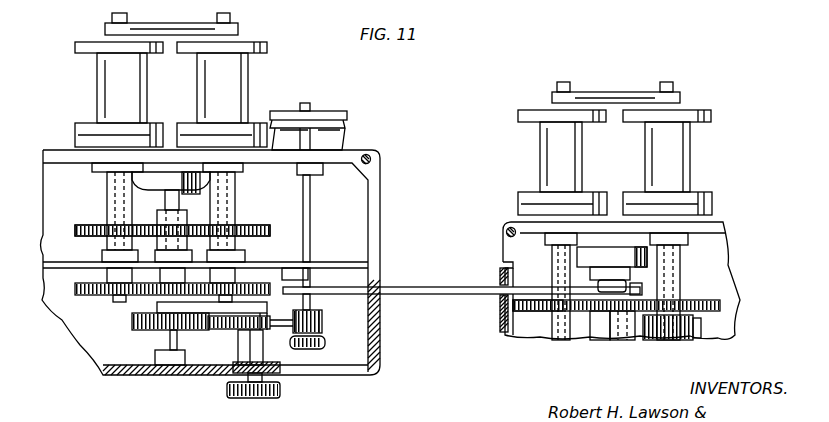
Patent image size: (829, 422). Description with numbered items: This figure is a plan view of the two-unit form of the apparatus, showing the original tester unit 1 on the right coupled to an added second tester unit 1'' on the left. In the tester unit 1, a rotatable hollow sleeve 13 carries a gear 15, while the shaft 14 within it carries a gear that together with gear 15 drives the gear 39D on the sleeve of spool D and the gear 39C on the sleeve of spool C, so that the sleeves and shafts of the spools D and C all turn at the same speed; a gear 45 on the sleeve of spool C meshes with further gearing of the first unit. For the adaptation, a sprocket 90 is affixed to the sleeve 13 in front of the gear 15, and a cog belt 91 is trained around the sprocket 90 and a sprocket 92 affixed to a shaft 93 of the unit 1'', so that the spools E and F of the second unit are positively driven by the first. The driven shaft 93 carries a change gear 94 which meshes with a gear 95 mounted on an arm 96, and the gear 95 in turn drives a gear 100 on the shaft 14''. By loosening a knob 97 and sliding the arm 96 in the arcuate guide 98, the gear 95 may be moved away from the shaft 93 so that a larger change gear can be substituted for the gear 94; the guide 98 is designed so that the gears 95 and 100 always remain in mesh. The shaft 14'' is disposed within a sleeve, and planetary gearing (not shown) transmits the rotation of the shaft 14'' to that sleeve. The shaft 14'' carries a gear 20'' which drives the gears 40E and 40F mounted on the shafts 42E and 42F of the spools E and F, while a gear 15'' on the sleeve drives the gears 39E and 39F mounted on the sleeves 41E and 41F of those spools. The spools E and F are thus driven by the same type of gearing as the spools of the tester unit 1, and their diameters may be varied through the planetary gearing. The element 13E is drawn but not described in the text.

The spool F is at (85, 86).
The spool E is at (248, 78).
The spool D is at (530, 150).
The spool C is at (696, 151).
The tester unit 1 is at (637, 172).
The second tester unit 1'' is at (235, 190).
The sleeve 41F is at (107, 185).
The shaft 42F is at (110, 198).
The sleeve 41E is at (235, 186).
The shaft 42E is at (230, 200).
The gear 15'' is at (171, 188).
The drive shaft 13E is at (157, 216).
The gear 39F is at (75, 230).
The gear 39E is at (270, 230).
The shaft 93 is at (310, 207).
The gear 40E is at (306, 286).
The gear 40F is at (75, 288).
The cog belt 91 is at (430, 287).
The gear 20'' is at (172, 315).
The gear 100 is at (132, 324).
The shaft 14'' is at (150, 347).
The arm 96 is at (240, 347).
The arcuate guide 98 is at (232, 376).
The knob 97 is at (280, 388).
The sprocket 92 is at (322, 298).
The gear 94 is at (322, 322).
The gear 95 is at (290, 340).
The sprocket 90 is at (640, 283).
The gear 39C is at (720, 305).
The gear 39D is at (514, 310).
The hollow sleeve 13 is at (615, 343).
The gear 15 is at (583, 341).
The shaft 14 is at (659, 342).
The gear 45 is at (700, 332).